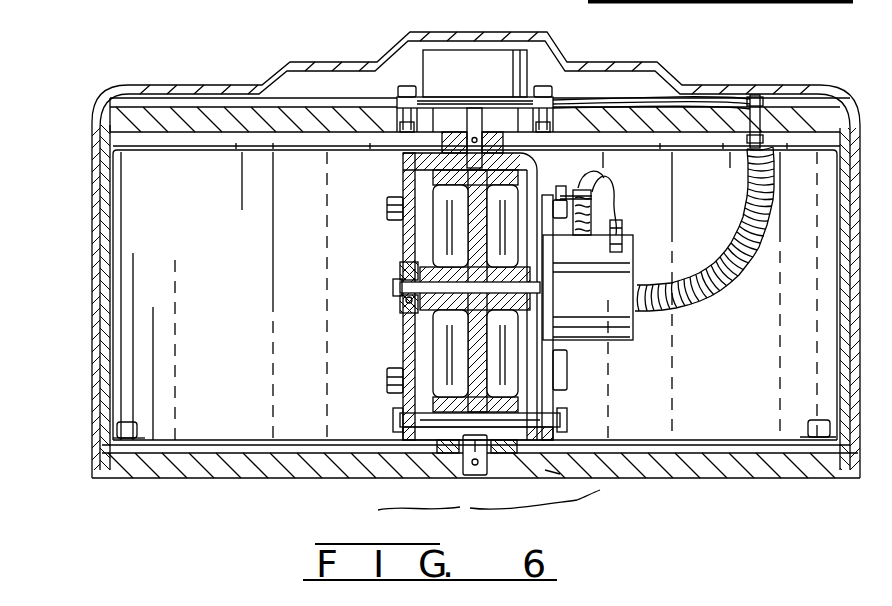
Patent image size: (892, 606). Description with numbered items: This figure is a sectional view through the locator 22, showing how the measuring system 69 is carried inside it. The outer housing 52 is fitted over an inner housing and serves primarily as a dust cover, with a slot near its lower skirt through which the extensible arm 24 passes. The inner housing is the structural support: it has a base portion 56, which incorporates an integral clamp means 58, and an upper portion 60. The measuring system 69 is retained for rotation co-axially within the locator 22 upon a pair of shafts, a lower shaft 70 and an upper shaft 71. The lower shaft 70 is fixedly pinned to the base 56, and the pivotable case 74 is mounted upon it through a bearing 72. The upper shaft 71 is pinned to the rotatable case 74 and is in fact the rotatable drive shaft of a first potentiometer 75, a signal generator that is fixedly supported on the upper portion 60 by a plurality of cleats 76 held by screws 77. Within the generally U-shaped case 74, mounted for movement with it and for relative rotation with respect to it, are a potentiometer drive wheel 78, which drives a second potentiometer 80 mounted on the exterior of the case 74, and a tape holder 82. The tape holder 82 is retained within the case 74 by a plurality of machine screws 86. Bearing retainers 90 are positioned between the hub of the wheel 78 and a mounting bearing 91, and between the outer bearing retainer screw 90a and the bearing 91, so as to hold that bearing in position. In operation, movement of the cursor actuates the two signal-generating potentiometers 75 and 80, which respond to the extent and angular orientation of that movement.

The locator 22 is at (80, 228).
The extensible arm 24 is at (405, 440).
The housing 52 is at (348, 62).
The base portion 56 is at (145, 465).
The clamp means 58 is at (463, 483).
The upper portion 60 is at (230, 118).
The measuring system 69 is at (642, 205).
The lower shaft 70 is at (555, 472).
The upper shaft 71 is at (430, 158).
The bearing 72 is at (463, 450).
The rotatable case 74 is at (405, 348).
The first potentiometer 75 is at (476, 79).
The cleats 76 is at (405, 88).
The screws 77 is at (550, 100).
The potentiometer drive wheel 78 is at (490, 343).
The second potentiometer 80 is at (608, 300).
The tape holder 82 is at (405, 260).
The machine screws 86 is at (388, 210).
The bearing retainers 90 is at (415, 318).
The outer bearing retainer screw 90a is at (402, 300).
The mounting bearing 91 is at (395, 272).